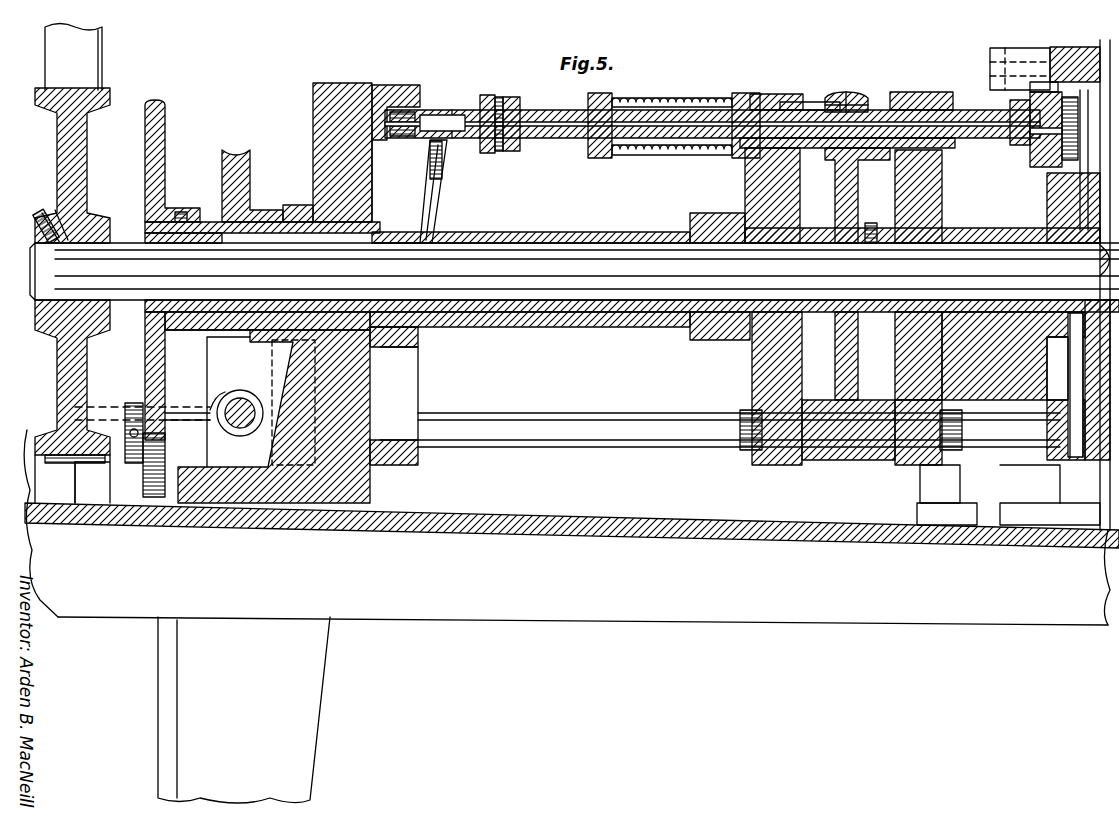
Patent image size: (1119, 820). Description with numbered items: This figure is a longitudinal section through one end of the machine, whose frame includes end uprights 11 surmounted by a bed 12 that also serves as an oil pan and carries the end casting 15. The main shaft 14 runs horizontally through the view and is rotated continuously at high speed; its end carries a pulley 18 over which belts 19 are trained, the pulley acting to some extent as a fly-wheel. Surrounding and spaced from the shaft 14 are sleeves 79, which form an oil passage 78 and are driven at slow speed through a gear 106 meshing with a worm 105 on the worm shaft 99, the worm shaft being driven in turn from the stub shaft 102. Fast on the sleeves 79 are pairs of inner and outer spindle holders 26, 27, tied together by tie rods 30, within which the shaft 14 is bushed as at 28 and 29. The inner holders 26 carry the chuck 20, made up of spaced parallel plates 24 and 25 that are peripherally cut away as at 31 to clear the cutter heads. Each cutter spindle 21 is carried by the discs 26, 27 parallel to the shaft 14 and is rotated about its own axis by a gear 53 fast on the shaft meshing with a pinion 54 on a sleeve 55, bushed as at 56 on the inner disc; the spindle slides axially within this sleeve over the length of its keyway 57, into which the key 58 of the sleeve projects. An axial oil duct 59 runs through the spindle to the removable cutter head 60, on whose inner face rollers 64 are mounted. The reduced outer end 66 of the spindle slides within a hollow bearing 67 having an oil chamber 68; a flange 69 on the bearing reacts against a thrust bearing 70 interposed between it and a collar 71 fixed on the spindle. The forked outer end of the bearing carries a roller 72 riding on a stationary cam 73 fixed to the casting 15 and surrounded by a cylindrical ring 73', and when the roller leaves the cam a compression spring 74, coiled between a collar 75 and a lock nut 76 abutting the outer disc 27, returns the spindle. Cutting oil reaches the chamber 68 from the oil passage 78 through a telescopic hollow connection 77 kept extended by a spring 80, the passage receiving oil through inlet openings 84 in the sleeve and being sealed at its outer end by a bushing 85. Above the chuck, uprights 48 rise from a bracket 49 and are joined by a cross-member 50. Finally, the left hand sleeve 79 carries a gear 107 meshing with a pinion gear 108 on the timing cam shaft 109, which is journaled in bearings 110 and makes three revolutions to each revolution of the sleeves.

The end uprights 11 is at (160, 672).
The bed 12 is at (487, 520).
The shaft 14 is at (520, 262).
The casting 15 is at (322, 134).
The pulley 18 is at (65, 376).
The belts 19 is at (50, 57).
The work-holding chuck 20 is at (1032, 409).
The cutter spindle 21 is at (975, 110).
The chuck plate 24 is at (1050, 378).
The chuck plate 25 is at (1080, 387).
The inner spindle holder 26 is at (937, 184).
The outer spindle holder 27 is at (762, 180).
The bushing 28 is at (960, 238).
The bushing 29 is at (750, 226).
The tie rods 30 is at (853, 440).
The peripheral cut-away 31 is at (1056, 176).
The uprights 48 is at (1015, 47).
The bracket 49 is at (1075, 525).
The cross-member 50 is at (1066, 50).
The gears 53 is at (848, 192).
The pinions 54 is at (852, 94).
The sleeves 55 is at (814, 100).
The bushing 56 is at (922, 92).
The keyway 57 is at (840, 90).
The key 58 is at (870, 104).
The oil ducts 59 is at (1000, 130).
The cutter head 60 is at (1044, 82).
The rollers 64 is at (1030, 95).
The reduced portion 66 is at (560, 115).
The hollow bearing 67 is at (452, 117).
The chamber 68 is at (438, 118).
The flange 69 is at (486, 95).
The thrust bearing 70 is at (502, 97).
The collar 71 is at (518, 101).
The roller 72 is at (400, 90).
The cam 73 is at (357, 139).
The cylindrical ring 73' is at (415, 88).
The compression springs 74 is at (665, 97).
The collars 75 is at (614, 95).
The lock nuts 76 is at (740, 95).
The telescopic hollow connections 77 is at (440, 180).
The oil passage 78 is at (435, 240).
The sleeves 79 is at (600, 236).
The springs 80 is at (441, 165).
The inlet openings 84 is at (384, 328).
The bushings 85 is at (208, 235).
The worm shaft 99 is at (240, 428).
The stub shaft 102 is at (189, 428).
The worm 105 is at (228, 400).
The gear 106 is at (228, 170).
The gear 107 is at (158, 136).
The pinion gear 108 is at (158, 498).
The timing cam shaft 109 is at (522, 430).
The bearings 110 is at (112, 466).